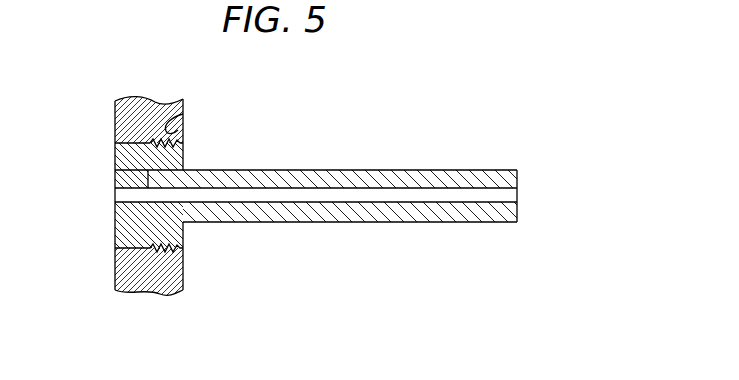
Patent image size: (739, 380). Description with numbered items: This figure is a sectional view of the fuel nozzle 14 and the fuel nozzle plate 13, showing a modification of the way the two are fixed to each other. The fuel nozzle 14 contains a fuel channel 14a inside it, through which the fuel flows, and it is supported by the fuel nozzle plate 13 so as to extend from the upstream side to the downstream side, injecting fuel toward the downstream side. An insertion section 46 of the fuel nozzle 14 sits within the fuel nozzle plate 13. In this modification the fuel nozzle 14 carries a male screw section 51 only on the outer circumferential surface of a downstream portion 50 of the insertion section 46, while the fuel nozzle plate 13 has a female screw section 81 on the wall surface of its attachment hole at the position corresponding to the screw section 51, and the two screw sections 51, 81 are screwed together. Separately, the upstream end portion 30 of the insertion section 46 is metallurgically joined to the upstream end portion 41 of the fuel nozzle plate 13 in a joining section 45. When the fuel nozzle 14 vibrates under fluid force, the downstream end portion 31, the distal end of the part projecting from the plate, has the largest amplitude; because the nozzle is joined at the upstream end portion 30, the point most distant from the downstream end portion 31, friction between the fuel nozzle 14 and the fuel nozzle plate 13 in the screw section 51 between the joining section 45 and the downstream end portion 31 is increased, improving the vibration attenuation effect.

The fuel nozzle plate 13 is at (115, 270).
The fuel nozzle 14 is at (318, 170).
The fuel channel 14a is at (505, 197).
The upstream end portion 30 is at (115, 174).
The downstream end portion 31 is at (517, 172).
The upstream end portion 41 is at (115, 118).
The joining section 45 is at (115, 143).
The insertion section 46 is at (153, 188).
The downstream portion 50 is at (183, 112).
The screw section 51 is at (183, 148).
The screw section 81 is at (183, 255).